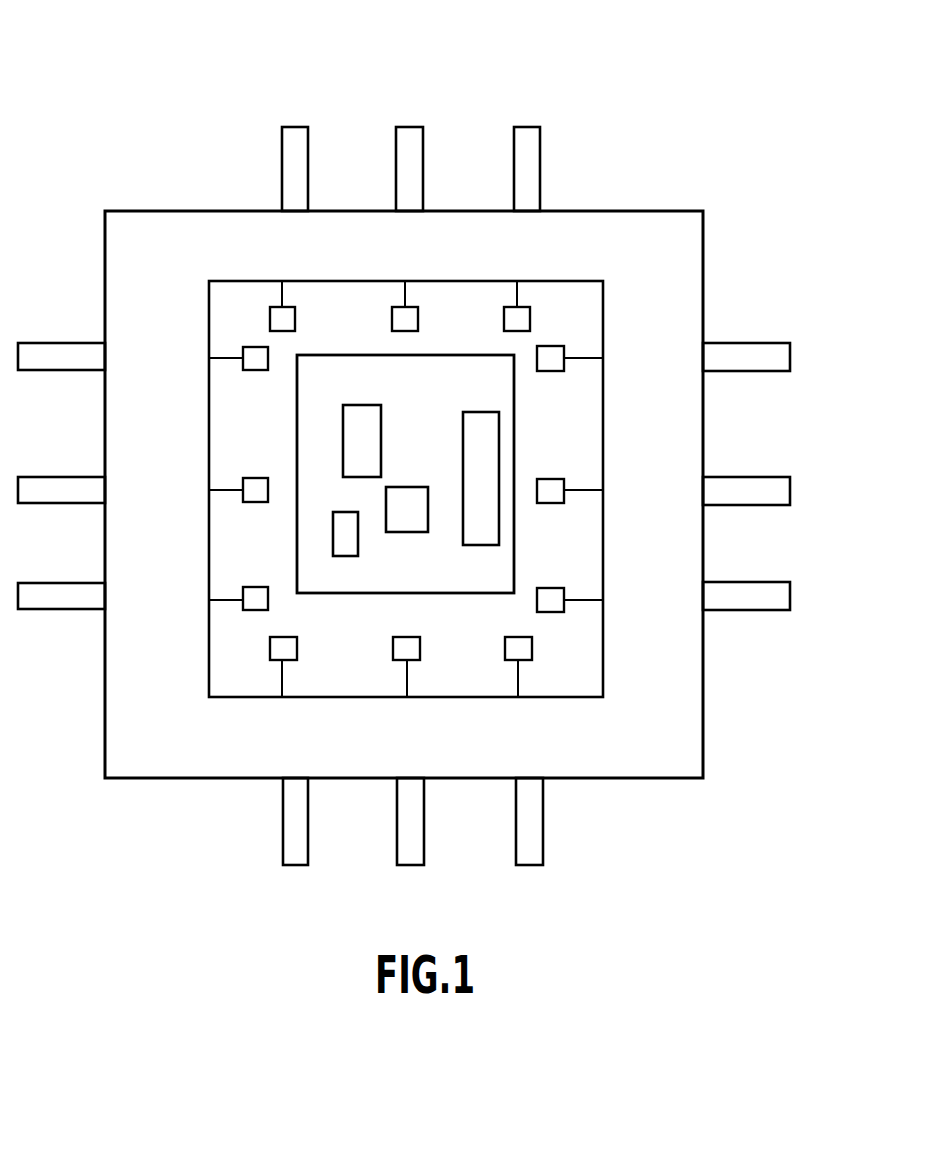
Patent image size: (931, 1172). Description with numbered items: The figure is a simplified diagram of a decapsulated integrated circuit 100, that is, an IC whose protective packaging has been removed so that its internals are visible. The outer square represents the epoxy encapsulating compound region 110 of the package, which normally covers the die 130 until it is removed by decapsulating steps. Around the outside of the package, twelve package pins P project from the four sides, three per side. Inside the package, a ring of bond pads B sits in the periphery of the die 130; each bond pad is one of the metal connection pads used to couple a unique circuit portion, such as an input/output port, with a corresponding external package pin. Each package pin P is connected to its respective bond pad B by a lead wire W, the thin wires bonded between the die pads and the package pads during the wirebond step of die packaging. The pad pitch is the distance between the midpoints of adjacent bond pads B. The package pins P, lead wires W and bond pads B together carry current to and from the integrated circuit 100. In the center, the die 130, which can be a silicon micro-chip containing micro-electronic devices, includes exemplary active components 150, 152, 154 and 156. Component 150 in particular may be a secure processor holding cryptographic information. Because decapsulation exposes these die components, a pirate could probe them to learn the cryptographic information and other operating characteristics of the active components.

The integrated circuit 100 is at (173, 104).
The epoxy encapsulating compound region 110 is at (105, 262).
The die 130 is at (333, 594).
The active component 150 is at (484, 412).
The active component 152 is at (378, 405).
The active component 154 is at (395, 487).
The active component 156 is at (344, 556).
The package pins P is at (308, 160).
The bond pads B is at (296, 323).
The lead wires W is at (281, 296).